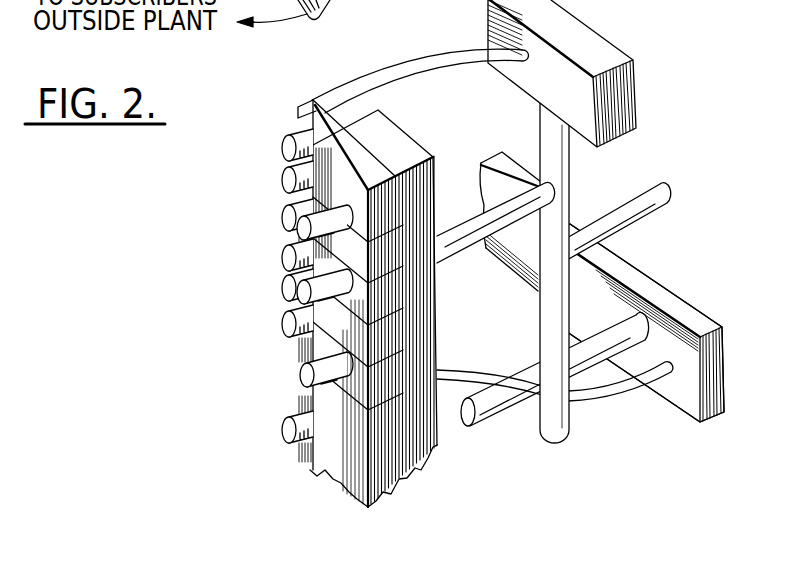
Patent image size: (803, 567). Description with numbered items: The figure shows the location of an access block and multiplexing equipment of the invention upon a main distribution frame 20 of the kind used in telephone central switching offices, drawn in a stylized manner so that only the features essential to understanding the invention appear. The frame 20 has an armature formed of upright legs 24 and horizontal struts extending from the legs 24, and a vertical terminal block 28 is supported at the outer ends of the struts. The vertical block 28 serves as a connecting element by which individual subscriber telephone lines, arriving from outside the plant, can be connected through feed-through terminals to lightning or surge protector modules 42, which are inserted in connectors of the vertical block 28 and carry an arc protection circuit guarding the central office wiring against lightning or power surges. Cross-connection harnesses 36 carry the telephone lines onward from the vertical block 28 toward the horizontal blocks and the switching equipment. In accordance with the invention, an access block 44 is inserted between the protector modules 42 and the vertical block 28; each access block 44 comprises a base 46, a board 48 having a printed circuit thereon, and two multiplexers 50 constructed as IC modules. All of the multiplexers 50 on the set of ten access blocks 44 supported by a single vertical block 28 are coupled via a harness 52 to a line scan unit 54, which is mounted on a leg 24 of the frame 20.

The main distribution frame 20 is at (724, 284).
The upright legs 24 is at (568, 427).
The vertical terminal block 28 is at (434, 447).
The harnesses 36 is at (471, 372).
The protector modules 42 is at (304, 372).
The access block 44 is at (398, 216).
The base 46 is at (358, 167).
The board 48 is at (315, 101).
The multiplexers 50 is at (284, 222).
The harness 52 is at (420, 58).
The line scan unit 54 is at (634, 84).